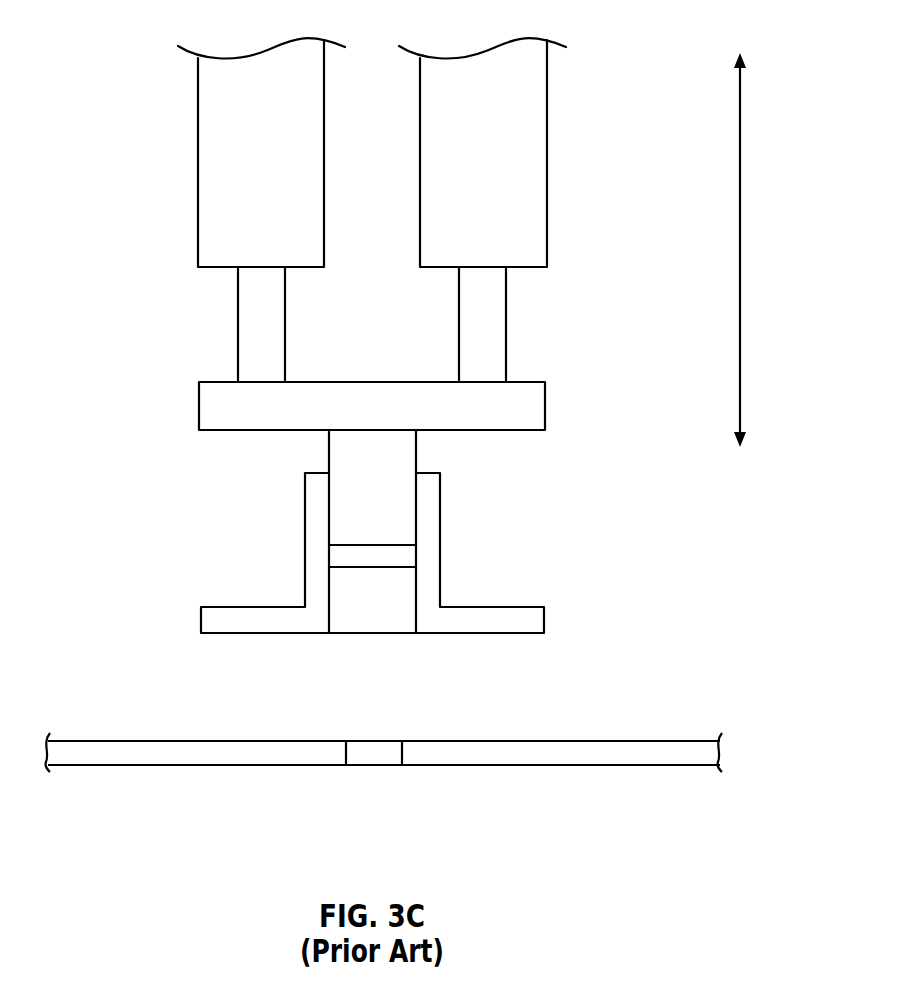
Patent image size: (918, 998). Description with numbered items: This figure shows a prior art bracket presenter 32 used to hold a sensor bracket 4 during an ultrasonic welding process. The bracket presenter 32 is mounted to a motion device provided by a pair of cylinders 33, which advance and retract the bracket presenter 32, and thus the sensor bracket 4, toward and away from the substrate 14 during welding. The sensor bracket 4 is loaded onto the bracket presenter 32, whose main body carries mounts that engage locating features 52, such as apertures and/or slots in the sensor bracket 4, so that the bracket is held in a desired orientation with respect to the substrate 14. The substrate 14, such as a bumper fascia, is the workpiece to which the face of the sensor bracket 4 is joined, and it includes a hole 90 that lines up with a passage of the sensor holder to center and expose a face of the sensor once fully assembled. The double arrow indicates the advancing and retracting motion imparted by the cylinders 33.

The cylinders 33 is at (218, 153).
The bracket presenter 32 is at (289, 453).
The sensor bracket 4 is at (497, 593).
The locating features 52 is at (380, 568).
The substrate 14 is at (619, 752).
The hole 90 is at (347, 749).